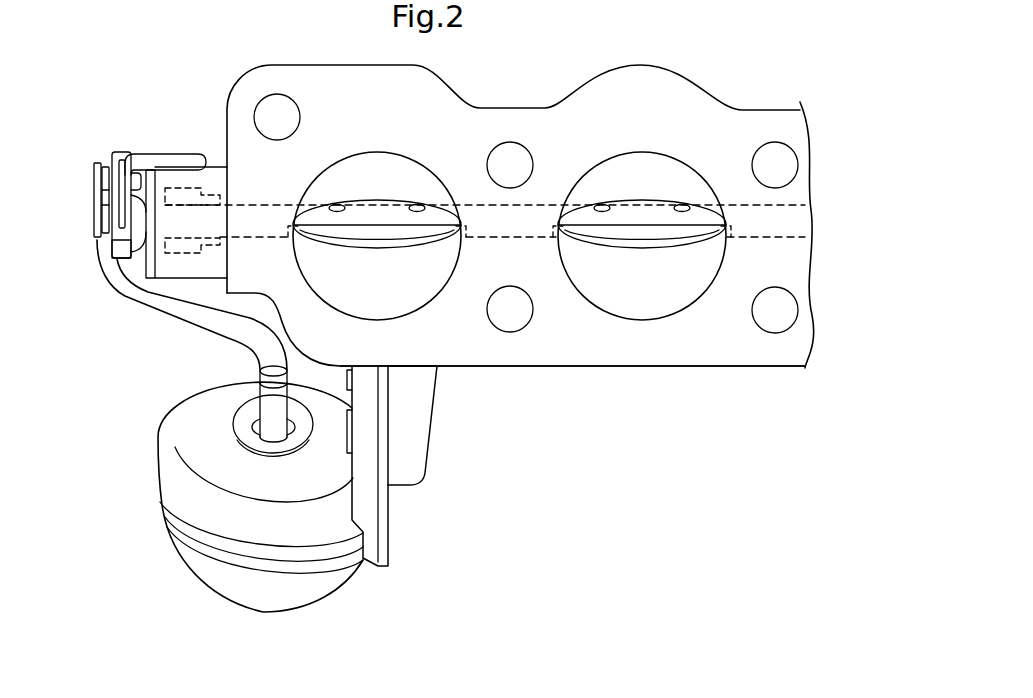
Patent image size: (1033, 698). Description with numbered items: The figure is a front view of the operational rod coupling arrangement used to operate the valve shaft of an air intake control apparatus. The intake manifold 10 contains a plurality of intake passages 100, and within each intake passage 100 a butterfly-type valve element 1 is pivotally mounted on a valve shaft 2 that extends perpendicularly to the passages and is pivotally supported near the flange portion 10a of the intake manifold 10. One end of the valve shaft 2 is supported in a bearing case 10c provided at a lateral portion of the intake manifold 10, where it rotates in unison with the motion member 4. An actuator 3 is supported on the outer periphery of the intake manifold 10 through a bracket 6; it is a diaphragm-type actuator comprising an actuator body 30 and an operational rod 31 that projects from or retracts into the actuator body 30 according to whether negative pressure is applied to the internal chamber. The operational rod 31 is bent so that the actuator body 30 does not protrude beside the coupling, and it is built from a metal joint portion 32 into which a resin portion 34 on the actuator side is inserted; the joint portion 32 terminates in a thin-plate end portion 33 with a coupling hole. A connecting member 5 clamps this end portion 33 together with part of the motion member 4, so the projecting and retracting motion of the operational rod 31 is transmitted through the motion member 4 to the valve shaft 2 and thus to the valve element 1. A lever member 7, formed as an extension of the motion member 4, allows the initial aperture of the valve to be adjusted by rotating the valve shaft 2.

The valve element 1 is at (413, 246).
The valve shaft 2 is at (481, 206).
The actuator 3 is at (218, 497).
The motion member 4 is at (113, 247).
The connecting member 5 is at (92, 206).
The bracket 6 is at (427, 423).
The lever member 7 is at (167, 153).
The intake manifold 10 is at (660, 368).
The flange portion 10a is at (557, 363).
The bearing case 10c is at (178, 271).
The actuator body 30 is at (178, 543).
The operational rod 31 is at (192, 341).
The joint portion 32 is at (216, 324).
The end portion 33 is at (105, 162).
The resin portion 34 is at (263, 405).
The intake passage 100 is at (353, 297).